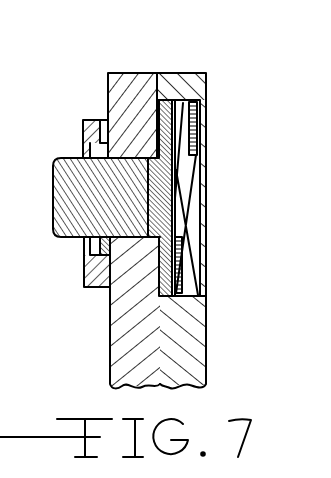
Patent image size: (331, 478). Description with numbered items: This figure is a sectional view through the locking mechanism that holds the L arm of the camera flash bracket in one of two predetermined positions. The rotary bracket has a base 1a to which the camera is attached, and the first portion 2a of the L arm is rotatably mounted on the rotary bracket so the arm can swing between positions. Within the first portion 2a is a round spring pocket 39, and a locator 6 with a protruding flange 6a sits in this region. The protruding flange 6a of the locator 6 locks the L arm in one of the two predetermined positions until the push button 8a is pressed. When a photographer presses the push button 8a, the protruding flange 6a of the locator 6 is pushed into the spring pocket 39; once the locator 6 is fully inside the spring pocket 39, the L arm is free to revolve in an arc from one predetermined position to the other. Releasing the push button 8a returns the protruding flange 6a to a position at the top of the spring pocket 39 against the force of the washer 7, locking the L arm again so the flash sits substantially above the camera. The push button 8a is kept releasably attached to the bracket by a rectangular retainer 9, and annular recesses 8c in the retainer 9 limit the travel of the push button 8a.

The base 1a is at (116, 73).
The first portion 2a is at (207, 97).
The locator 6 is at (190, 210).
The protruding flange 6a is at (166, 104).
The washer 7 is at (200, 170).
The push button 8a is at (57, 158).
The annular recesses 8c is at (101, 117).
The rectangular retainer 9 is at (89, 288).
The round spring pocket 39 is at (204, 316).